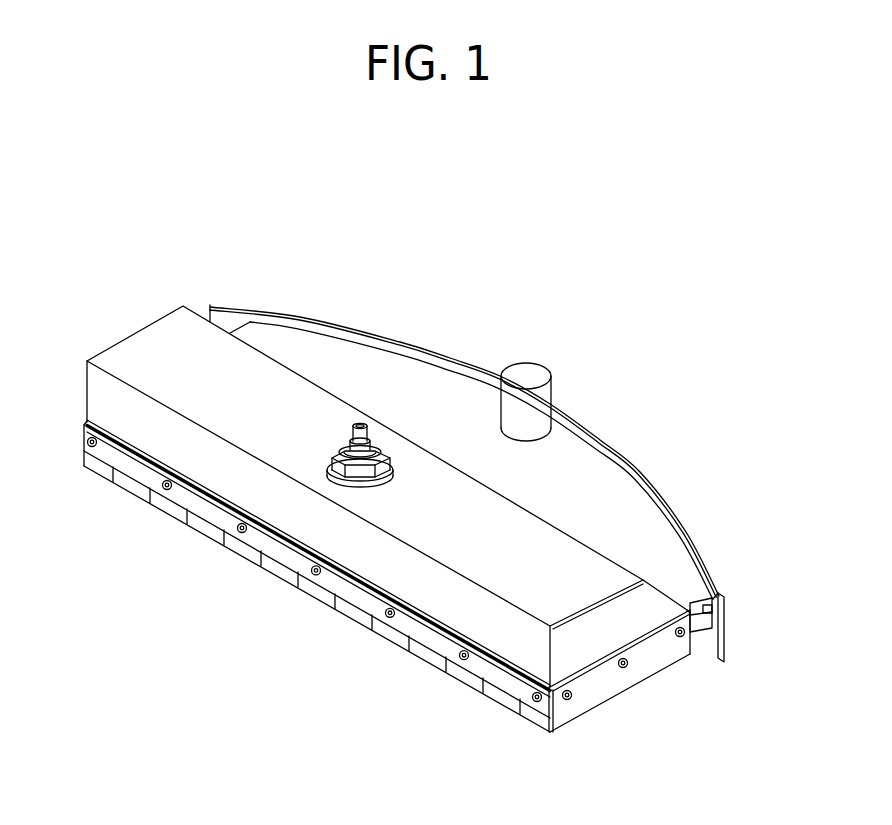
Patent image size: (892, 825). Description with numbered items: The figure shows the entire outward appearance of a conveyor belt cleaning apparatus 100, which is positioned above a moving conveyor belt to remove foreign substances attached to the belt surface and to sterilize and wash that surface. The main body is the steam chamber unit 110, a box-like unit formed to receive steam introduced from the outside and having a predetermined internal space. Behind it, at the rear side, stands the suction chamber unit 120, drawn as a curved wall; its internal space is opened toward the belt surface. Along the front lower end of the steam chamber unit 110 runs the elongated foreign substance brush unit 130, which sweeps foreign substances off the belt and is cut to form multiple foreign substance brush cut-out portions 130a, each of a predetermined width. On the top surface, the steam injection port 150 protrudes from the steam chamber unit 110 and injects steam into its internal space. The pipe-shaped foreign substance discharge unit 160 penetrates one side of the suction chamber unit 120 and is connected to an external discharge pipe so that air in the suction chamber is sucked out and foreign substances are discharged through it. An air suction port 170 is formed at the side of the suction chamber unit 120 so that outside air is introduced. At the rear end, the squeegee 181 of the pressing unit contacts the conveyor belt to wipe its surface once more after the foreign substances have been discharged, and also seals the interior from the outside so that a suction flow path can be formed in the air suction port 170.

The cleaning apparatus 100 is at (102, 306).
The steam chamber unit 110 is at (230, 463).
The suction chamber unit 120 is at (592, 497).
The foreign substance brush unit 130 is at (387, 576).
The foreign substance brush cut-out portions 130a is at (427, 653).
The steam injection port 150 is at (347, 428).
The foreign substance discharge unit 160 is at (526, 378).
The air suction port 170 is at (696, 620).
The squeegee 181 is at (712, 626).